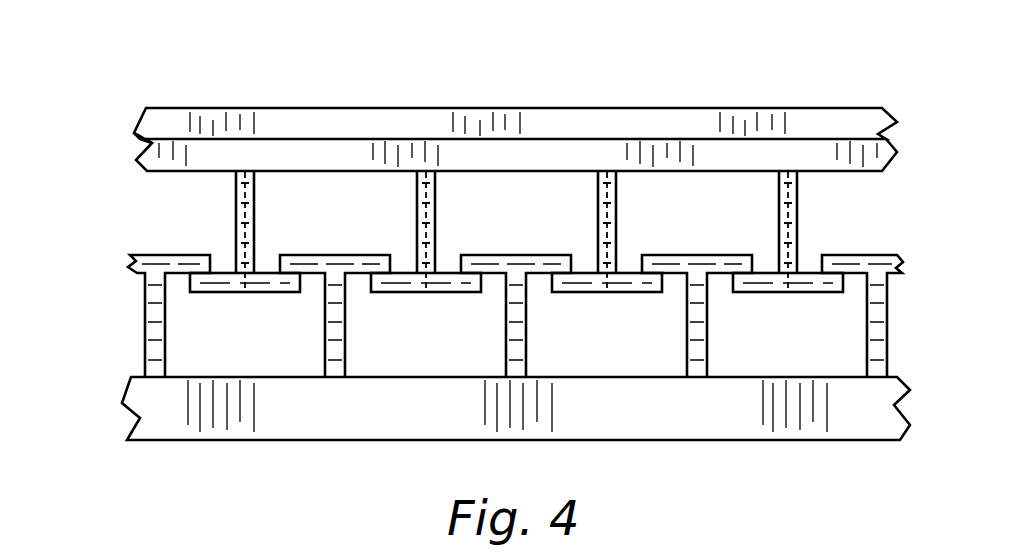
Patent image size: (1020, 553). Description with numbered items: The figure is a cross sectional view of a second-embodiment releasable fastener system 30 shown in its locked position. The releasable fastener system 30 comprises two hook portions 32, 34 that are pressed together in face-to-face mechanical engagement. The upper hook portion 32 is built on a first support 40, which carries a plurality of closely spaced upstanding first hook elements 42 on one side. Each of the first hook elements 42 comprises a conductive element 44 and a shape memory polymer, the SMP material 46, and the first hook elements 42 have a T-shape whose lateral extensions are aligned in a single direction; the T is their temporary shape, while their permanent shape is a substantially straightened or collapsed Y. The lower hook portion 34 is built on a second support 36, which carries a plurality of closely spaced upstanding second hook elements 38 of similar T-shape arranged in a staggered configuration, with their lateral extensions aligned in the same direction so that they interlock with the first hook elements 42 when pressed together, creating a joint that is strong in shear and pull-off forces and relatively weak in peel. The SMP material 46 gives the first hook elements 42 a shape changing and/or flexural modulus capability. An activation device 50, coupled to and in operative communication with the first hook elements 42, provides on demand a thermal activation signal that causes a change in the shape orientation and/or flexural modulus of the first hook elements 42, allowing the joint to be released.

The releasable fastener system 30 is at (413, 76).
The hook portion 32 is at (102, 142).
The hook portion 34 is at (124, 329).
The second support 36 is at (677, 417).
The second hook elements 38 is at (356, 336).
The first support 40 is at (313, 153).
The first hook elements 42 is at (447, 204).
The conductive element 44 is at (253, 233).
The SMP material 46 is at (208, 292).
The activation device 50 is at (560, 122).